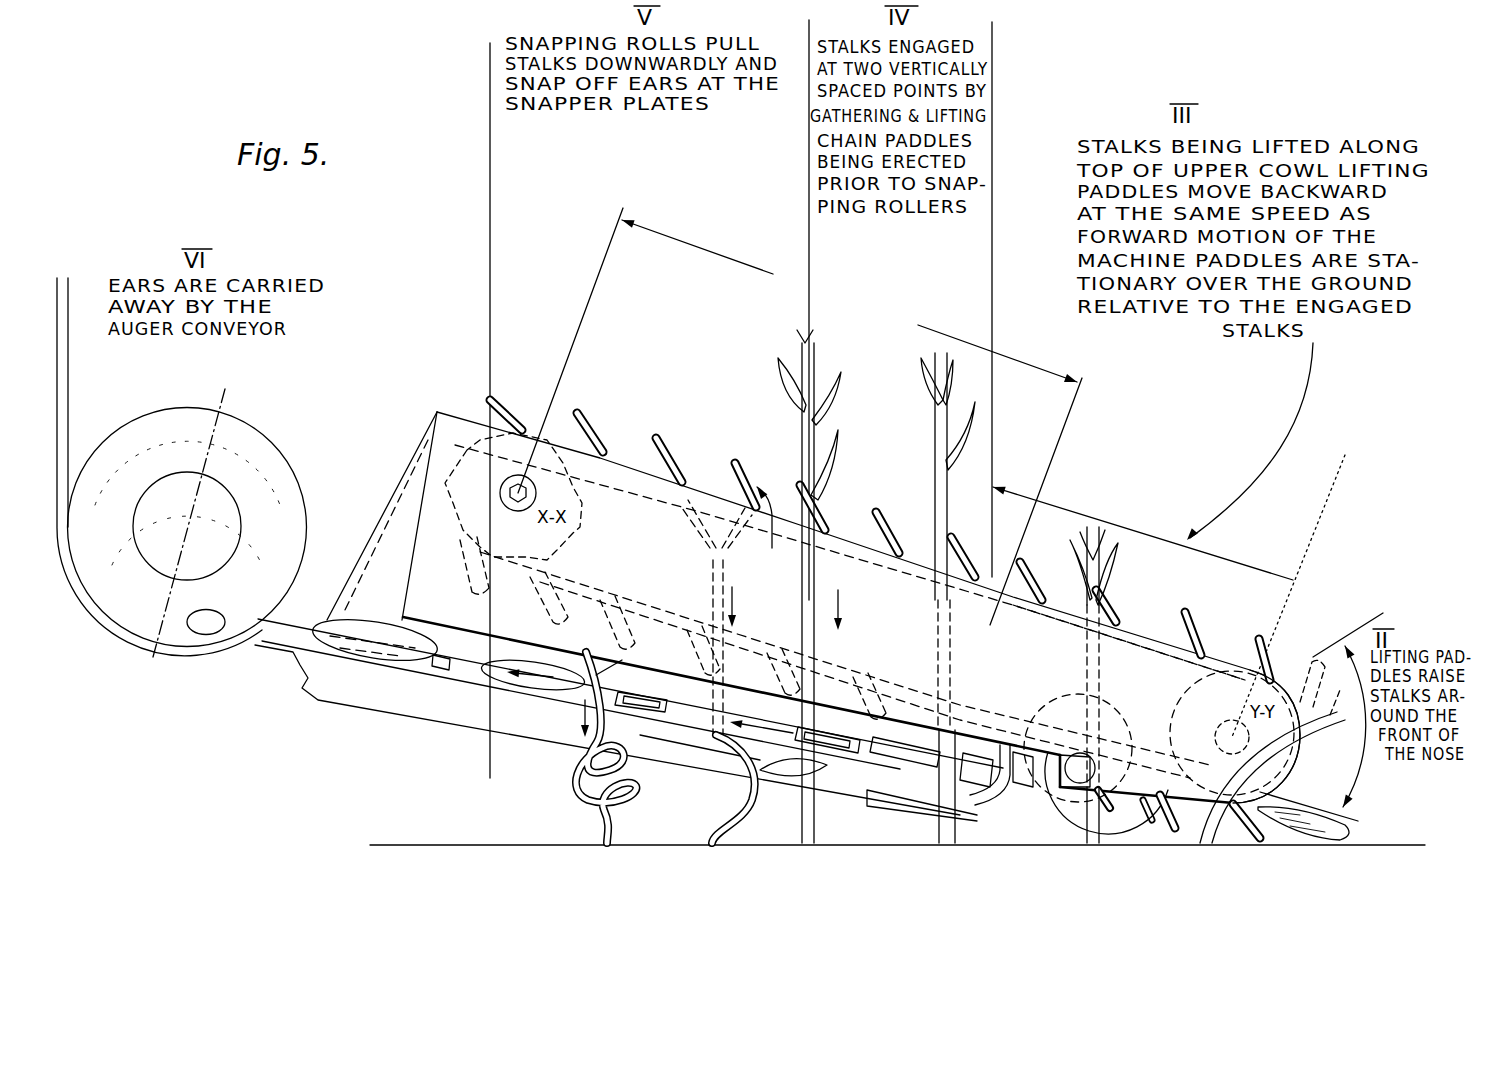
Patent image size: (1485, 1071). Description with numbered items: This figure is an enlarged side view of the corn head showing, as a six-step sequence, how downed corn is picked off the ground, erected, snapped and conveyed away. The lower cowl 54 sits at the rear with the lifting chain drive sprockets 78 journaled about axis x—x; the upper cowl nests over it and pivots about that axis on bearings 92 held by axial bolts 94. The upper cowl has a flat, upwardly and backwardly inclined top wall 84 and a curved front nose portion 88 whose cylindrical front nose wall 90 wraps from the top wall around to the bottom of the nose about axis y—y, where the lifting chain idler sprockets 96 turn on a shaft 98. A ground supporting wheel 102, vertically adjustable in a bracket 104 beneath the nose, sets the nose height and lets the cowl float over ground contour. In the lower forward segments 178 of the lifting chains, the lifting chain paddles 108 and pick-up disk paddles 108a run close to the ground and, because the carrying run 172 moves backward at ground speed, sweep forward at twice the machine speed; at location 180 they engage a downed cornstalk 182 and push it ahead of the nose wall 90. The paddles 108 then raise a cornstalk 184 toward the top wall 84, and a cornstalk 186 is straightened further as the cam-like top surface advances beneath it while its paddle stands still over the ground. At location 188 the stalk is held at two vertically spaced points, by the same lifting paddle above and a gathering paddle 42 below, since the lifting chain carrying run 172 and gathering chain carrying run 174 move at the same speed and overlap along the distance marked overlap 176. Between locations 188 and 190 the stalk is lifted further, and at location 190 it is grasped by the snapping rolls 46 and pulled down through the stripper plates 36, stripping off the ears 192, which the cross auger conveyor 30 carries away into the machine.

The cross auger conveyor 30 is at (242, 413).
The stripper plates 36 is at (752, 742).
The gathering paddles 42 is at (657, 696).
The snapping rolls 46 is at (803, 780).
The lower cowl 54 is at (437, 412).
The lifting chain drive sprockets 78 is at (603, 528).
The top wall 84 is at (1154, 626).
The front nose portion 88 is at (1305, 748).
The front nose wall 90 is at (1302, 778).
The bearings 92 is at (519, 476).
The axial bolts 94 is at (528, 493).
The lifting chain idler sprockets 96 is at (1160, 728).
The shaft 98 is at (1218, 730).
The ground supporting wheel 102 is at (1025, 823).
The bracket 104 is at (1072, 787).
The lifting chain paddles 108 is at (728, 467).
The pick-up disk paddles 108a is at (1180, 680).
The carrying run of lifting chain 172 is at (741, 611).
The carrying run of gathering chain 174 is at (685, 716).
The overlap 176 is at (915, 342).
The lower forward segments of lifting chains 178 is at (1163, 815).
The location 180 is at (1272, 845).
The downed cornstalk 182 is at (1337, 838).
The cornstalk 184 is at (1243, 767).
The cornstalk 186 is at (1104, 655).
The location 188 is at (966, 691).
The location 190 is at (846, 704).
The ears 192 is at (212, 635).